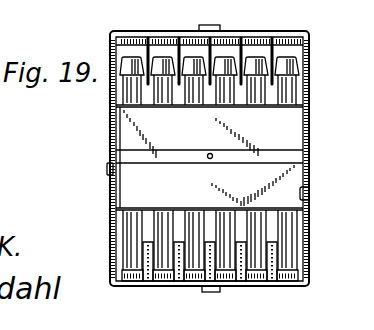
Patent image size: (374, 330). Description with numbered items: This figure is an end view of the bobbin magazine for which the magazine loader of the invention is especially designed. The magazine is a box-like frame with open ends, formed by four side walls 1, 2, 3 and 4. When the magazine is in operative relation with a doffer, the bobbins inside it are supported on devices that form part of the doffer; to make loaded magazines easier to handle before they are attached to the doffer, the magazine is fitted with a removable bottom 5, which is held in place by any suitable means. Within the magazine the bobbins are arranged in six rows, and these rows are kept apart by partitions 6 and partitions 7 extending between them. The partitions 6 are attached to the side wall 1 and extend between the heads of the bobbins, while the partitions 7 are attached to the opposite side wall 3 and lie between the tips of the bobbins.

The side wall 1 is at (206, 53).
The side wall 2 is at (310, 91).
The side wall 3 is at (236, 272).
The side wall 4 is at (110, 177).
The removable bottom 5 is at (196, 128).
The partition 6 is at (238, 43).
The partition 7 is at (276, 243).